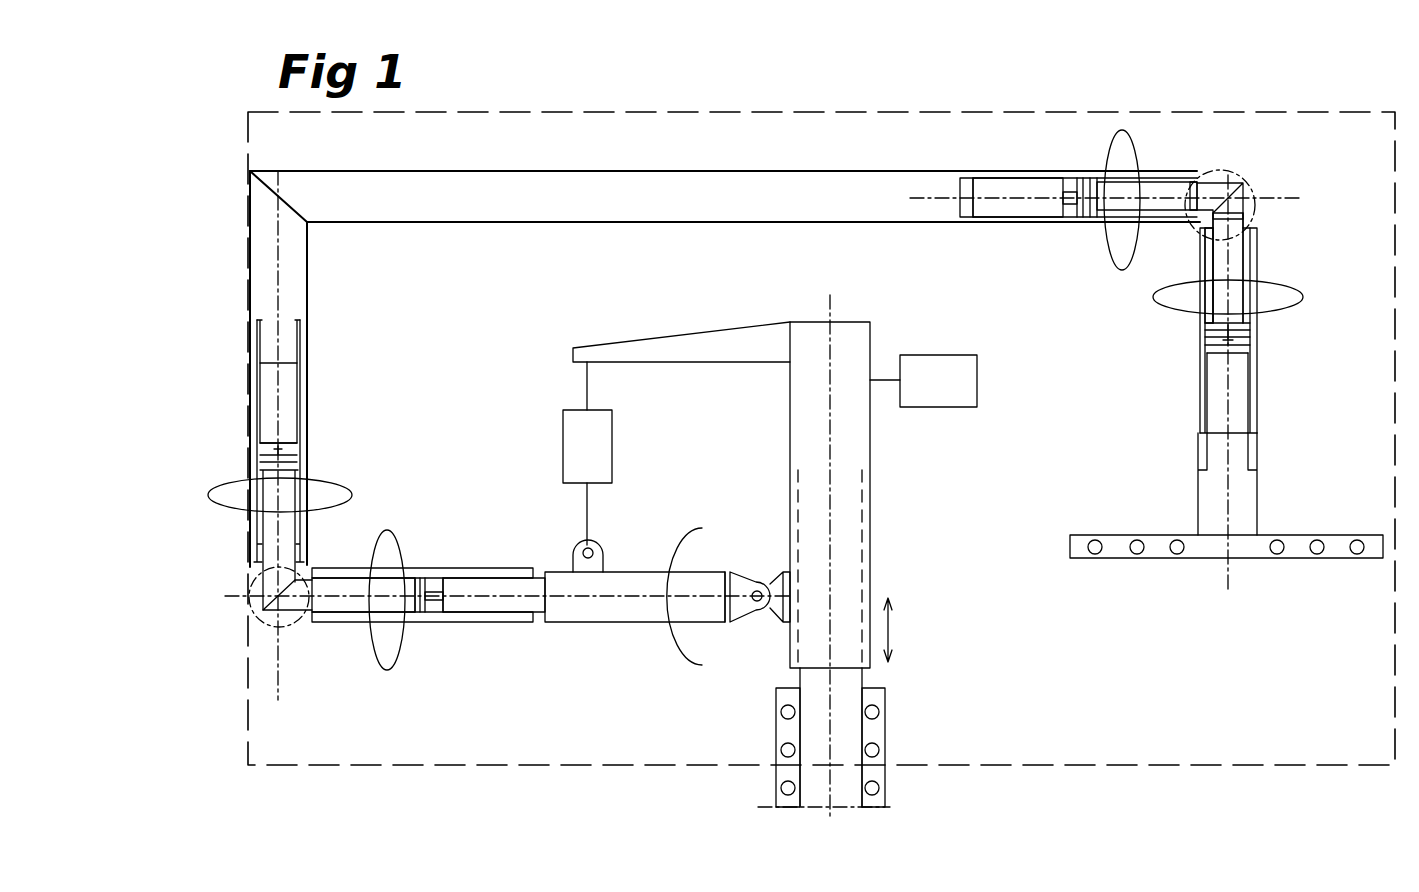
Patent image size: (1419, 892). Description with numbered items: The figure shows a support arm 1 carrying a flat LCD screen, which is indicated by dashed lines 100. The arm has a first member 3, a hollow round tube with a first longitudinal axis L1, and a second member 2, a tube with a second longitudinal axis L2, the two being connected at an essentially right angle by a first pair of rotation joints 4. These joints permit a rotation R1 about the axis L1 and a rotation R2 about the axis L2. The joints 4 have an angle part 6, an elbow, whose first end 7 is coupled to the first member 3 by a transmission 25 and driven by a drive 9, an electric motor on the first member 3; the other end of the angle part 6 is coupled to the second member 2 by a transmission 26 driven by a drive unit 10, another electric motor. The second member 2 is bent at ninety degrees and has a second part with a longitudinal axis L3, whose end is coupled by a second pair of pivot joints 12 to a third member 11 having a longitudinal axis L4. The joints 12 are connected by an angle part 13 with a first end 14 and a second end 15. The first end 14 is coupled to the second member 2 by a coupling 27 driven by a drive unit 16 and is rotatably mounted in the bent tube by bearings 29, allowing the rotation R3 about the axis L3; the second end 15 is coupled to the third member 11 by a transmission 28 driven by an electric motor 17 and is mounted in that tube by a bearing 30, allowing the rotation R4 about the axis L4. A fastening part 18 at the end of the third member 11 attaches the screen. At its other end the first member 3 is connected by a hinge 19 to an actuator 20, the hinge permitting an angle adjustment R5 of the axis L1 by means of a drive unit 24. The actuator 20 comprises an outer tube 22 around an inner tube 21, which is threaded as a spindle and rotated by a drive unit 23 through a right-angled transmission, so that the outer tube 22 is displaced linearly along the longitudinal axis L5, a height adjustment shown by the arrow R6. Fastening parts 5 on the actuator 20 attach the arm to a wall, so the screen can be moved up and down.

The robot arm apparatus envelope 100 is at (815, 128).
The support arm 1 is at (237, 278).
The second member 2 is at (298, 251).
The first longitudinal axis L1 is at (232, 595).
The drive unit 10 is at (295, 392).
The transmission 26 is at (257, 455).
The bearings 29 is at (252, 560).
The angle part 6 is at (250, 580).
The rotation joints 4 is at (257, 627).
The second longitudinal axis L2 is at (295, 614).
The rotation about axis L2 R2 is at (360, 485).
The rotation about axis L1 R1 is at (372, 540).
The first end 7 is at (357, 602).
The transmission 25 is at (432, 575).
The drive 9 is at (492, 580).
The first member 3 is at (597, 612).
The hinge 19 is at (757, 586).
The angle adjustment R5 is at (678, 548).
The actuator 20 is at (875, 490).
The longitudinal axis L5 is at (828, 305).
The outer tube 22 is at (870, 338).
The drive unit 24 is at (597, 443).
The drive unit 23 is at (962, 378).
The vertical translation R6 is at (894, 628).
The fastening part 5 is at (785, 778).
The inner tube 21 is at (848, 797).
The drive unit 16 is at (1030, 185).
The coupling 27 is at (1078, 222).
The first end 14 is at (1122, 195).
The longitudinal axis L3 is at (1292, 198).
The bearing 30 is at (1178, 224).
The rotation about axis L3 R3 is at (1122, 268).
The pivot joints 12 is at (1265, 172).
The longitudinal axis L4 is at (1232, 168).
The angle part 13 is at (1243, 210).
The second end 15 is at (1237, 265).
The rotation about axis L4 R4 is at (1303, 298).
The transmission 28 is at (1248, 345).
The electric motor 17 is at (1240, 385).
The third member 11 is at (1248, 440).
The fastening part 18 is at (1345, 538).